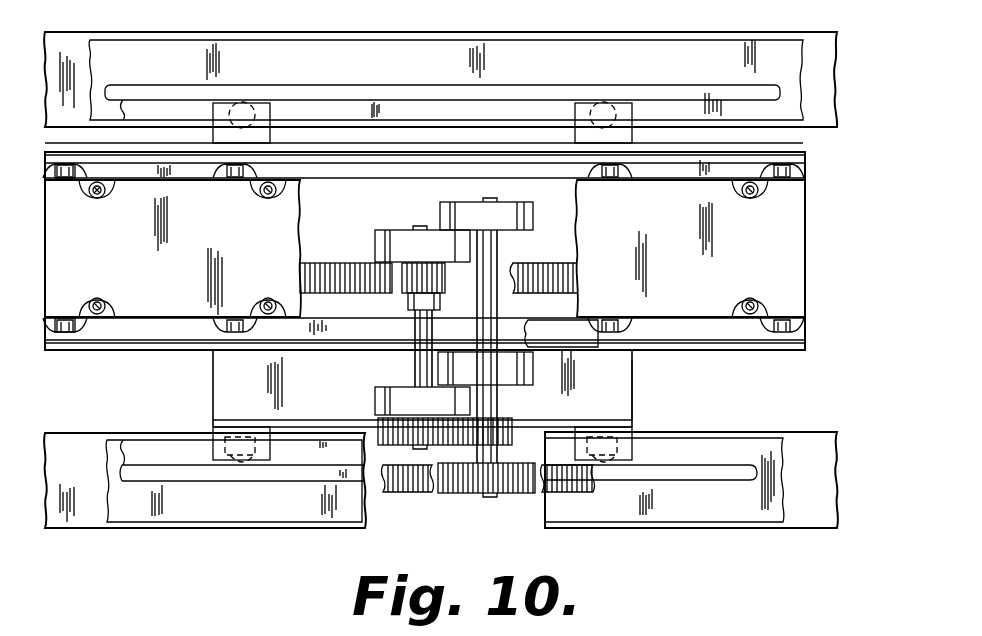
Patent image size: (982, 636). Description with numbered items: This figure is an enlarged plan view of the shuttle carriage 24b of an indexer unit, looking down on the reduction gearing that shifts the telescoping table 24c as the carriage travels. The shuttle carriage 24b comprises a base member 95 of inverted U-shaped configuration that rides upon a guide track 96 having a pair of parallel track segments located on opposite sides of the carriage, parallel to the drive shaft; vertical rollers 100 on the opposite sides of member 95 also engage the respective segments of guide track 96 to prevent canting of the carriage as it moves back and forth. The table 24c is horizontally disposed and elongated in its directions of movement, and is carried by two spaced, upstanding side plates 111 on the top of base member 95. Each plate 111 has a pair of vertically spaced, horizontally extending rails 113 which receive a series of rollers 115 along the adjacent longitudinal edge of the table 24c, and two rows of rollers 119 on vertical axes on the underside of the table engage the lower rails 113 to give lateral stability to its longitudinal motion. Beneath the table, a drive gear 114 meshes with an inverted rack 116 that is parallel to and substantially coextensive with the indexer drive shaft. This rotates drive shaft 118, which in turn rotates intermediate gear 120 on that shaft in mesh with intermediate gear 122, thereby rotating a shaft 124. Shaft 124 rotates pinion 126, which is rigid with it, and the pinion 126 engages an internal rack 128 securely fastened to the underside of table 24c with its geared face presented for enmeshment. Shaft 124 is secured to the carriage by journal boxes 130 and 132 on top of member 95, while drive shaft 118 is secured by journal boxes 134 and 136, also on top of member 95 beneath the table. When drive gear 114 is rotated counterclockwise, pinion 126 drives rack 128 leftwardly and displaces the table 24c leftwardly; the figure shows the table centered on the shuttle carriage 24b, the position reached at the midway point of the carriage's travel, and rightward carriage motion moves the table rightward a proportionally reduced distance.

The guide track 96 is at (520, 46).
The vertical rollers 100 is at (243, 108).
The base member 95 is at (228, 373).
The side plates 111 is at (137, 155).
The rails 113 is at (748, 167).
The rollers 115 is at (63, 176).
The rollers 119 is at (98, 194).
The telescoping table 24c is at (793, 271).
The shuttle carriage 24b is at (645, 380).
The internal rack 128 is at (343, 262).
The journal box 134 is at (473, 204).
The journal box 130 is at (410, 210).
The drive shaft 118 is at (483, 320).
The pinion 126 is at (405, 296).
The shaft 124 is at (421, 354).
The journal box 136 is at (507, 338).
The journal box 132 is at (436, 372).
The intermediate gear 122 is at (380, 427).
The intermediate gear 120 is at (505, 425).
The drive gear 114 is at (525, 495).
The inverted rack 116 is at (410, 494).